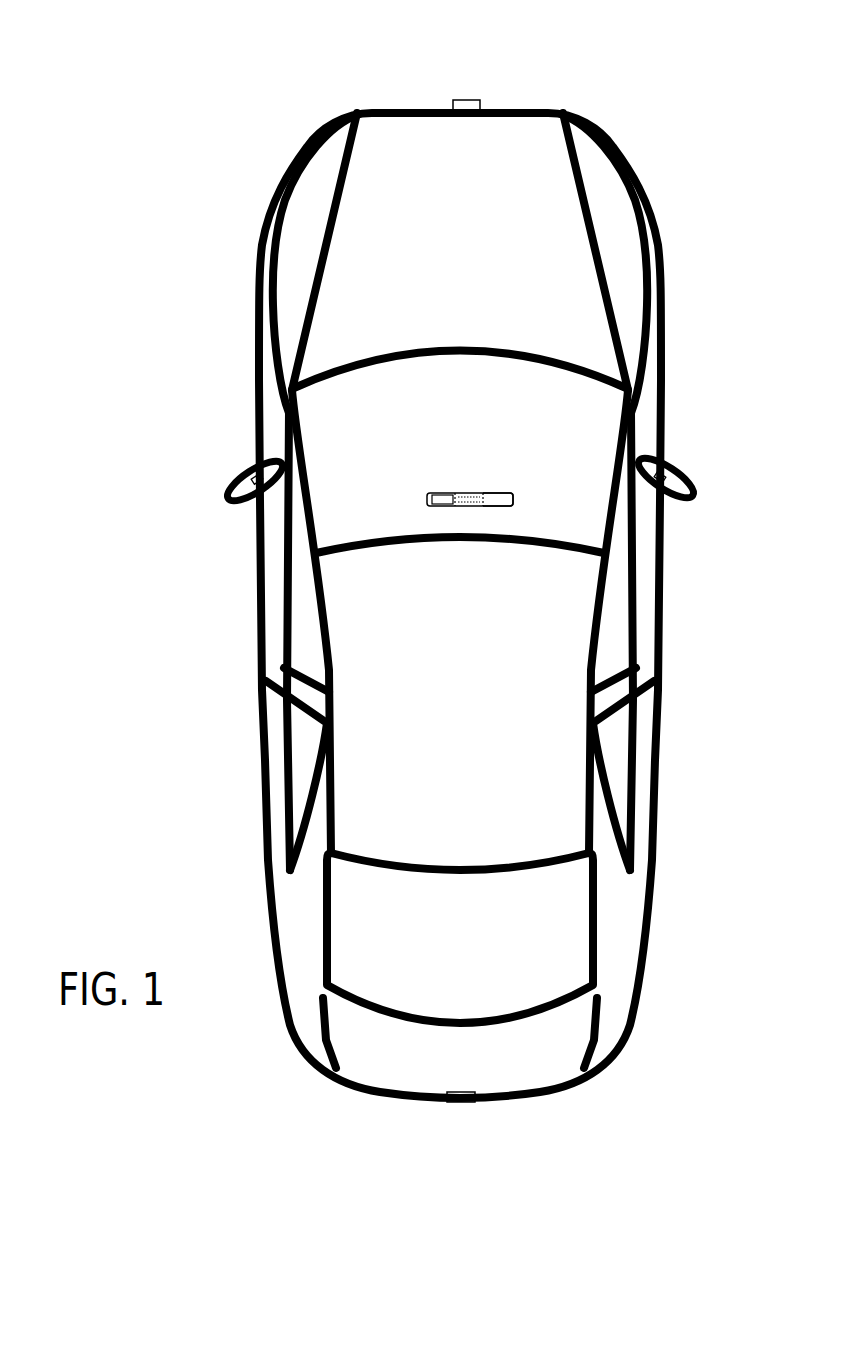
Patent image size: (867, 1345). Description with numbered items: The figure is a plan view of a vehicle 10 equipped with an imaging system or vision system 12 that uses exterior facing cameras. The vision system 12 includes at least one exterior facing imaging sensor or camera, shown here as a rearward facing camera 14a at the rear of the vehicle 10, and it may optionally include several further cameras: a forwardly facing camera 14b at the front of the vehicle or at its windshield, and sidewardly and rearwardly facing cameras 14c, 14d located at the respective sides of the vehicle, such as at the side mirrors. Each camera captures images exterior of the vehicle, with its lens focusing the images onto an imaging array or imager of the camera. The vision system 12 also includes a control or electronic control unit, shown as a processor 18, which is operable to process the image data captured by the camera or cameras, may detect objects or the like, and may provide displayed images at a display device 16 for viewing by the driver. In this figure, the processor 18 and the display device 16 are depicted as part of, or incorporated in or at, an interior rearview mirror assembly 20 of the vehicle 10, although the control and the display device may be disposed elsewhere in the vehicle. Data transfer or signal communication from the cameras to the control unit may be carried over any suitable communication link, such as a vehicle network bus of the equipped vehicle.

The vehicle 10 is at (201, 197).
The vision system 12 is at (402, 1129).
The rearward facing camera 14a is at (466, 1102).
The forwardly facing camera 14b is at (471, 100).
The sidewardly/rearwardly facing camera 14c is at (248, 473).
The sidewardly/rearwardly facing camera 14d is at (668, 476).
The display device 16 is at (442, 493).
The processor 18 is at (467, 490).
The interior rearview mirror assembly 20 is at (513, 493).